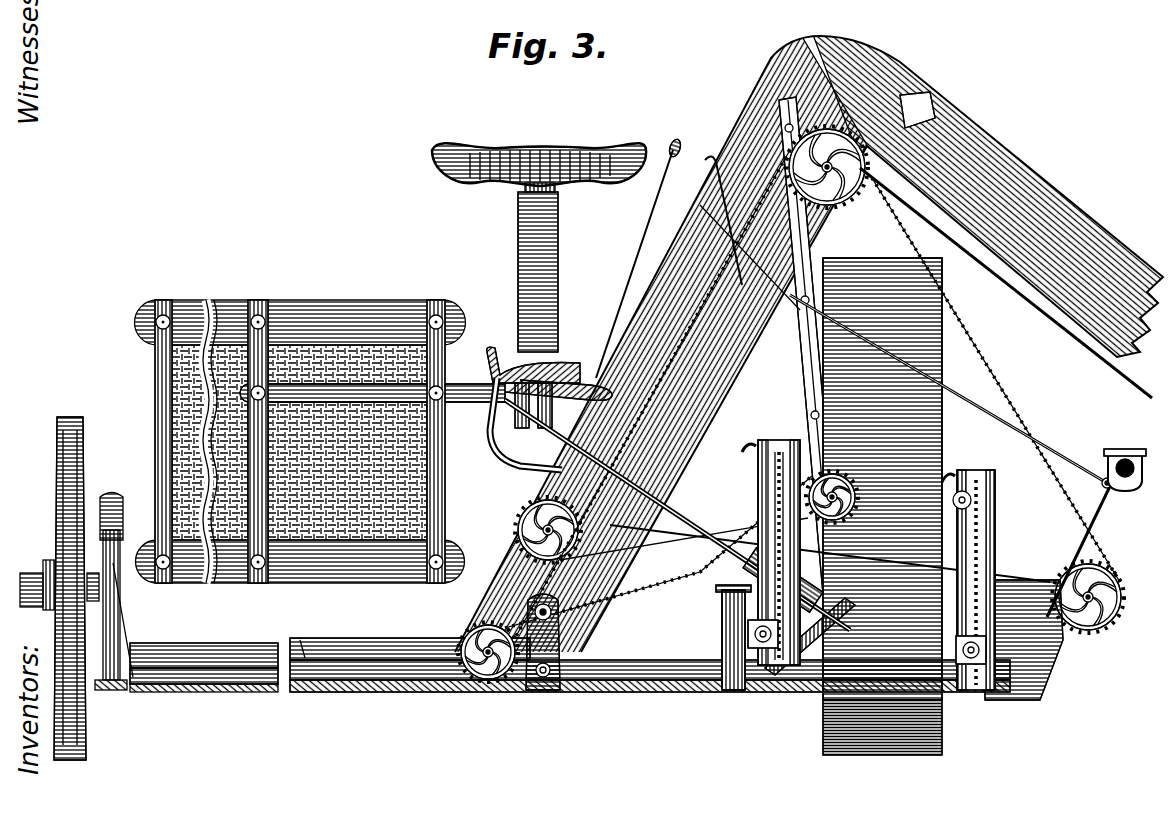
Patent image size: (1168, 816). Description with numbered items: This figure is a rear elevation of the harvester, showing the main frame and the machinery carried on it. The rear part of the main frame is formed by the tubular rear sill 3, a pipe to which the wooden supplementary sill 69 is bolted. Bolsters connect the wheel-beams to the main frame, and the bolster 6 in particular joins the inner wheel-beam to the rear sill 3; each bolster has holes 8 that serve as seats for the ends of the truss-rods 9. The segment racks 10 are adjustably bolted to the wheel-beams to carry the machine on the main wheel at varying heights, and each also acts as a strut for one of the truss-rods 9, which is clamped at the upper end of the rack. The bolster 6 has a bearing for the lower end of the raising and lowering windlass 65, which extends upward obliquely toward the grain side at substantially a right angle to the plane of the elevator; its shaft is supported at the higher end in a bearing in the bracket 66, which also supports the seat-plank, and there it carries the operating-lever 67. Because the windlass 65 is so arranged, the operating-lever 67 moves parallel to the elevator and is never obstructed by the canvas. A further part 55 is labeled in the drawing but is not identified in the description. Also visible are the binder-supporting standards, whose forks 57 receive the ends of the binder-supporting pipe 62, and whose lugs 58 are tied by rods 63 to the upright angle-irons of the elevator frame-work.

The tubular rear sill 3 is at (650, 665).
The bolster 6 is at (720, 638).
The holes 8 is at (762, 690).
The truss-rods 9 is at (805, 492).
The segment racks 10 is at (758, 458).
The rod 55 is at (568, 440).
The fork 57 is at (1138, 452).
The lug 58 is at (1095, 489).
The binder-supporting pipe 62 is at (1143, 471).
The rods 63 is at (948, 389).
The raising and lowering windlass 65 is at (783, 580).
The bracket 66 is at (510, 406).
The operating-lever 67 is at (682, 150).
The supplementary sill 69 is at (398, 648).